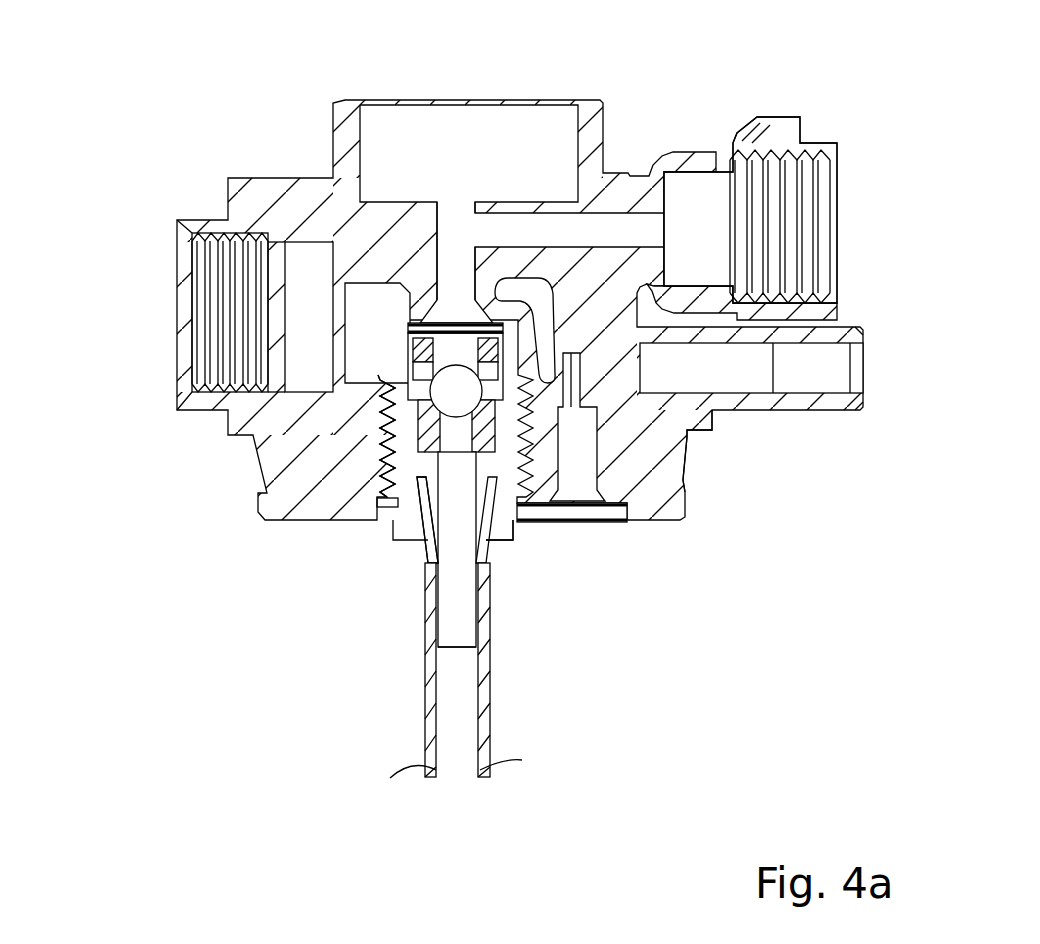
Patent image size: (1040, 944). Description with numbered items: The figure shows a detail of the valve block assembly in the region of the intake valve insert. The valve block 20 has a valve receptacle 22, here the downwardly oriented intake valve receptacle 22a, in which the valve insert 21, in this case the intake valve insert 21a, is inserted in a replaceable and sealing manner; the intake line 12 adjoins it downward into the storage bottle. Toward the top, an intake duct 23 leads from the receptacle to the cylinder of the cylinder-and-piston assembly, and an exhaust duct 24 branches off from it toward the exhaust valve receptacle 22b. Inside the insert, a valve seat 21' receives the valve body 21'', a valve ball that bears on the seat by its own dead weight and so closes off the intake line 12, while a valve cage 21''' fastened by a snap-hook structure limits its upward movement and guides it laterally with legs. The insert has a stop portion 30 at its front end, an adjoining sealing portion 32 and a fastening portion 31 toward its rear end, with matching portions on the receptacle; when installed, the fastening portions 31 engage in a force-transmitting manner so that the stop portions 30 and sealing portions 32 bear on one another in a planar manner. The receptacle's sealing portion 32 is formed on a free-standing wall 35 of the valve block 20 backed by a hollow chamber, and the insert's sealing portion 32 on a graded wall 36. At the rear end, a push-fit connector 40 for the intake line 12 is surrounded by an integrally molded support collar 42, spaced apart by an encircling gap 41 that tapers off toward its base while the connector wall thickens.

The intake line 12 is at (488, 710).
The valve block 20 is at (338, 197).
The valve insert 21 is at (280, 436).
The intake valve insert 21a is at (326, 528).
The valve seat 21' is at (220, 436).
The valve body 21'' is at (211, 391).
The valve cage 21''' is at (229, 308).
The valve receptacle 22 is at (839, 313).
The intake valve receptacle 22a is at (430, 579).
The exhaust valve receptacle 22b is at (802, 211).
The intake duct 23 is at (452, 265).
The exhaust duct 24 is at (618, 175).
The stop portion 30 is at (410, 345).
The fastening portion 31 is at (822, 143).
The sealing portion 32 is at (423, 380).
The wall 35 is at (673, 162).
The wall 36 is at (672, 460).
The push-fit connector 40 is at (480, 617).
The encircling gap 41 is at (487, 533).
The support collar 42 is at (507, 533).